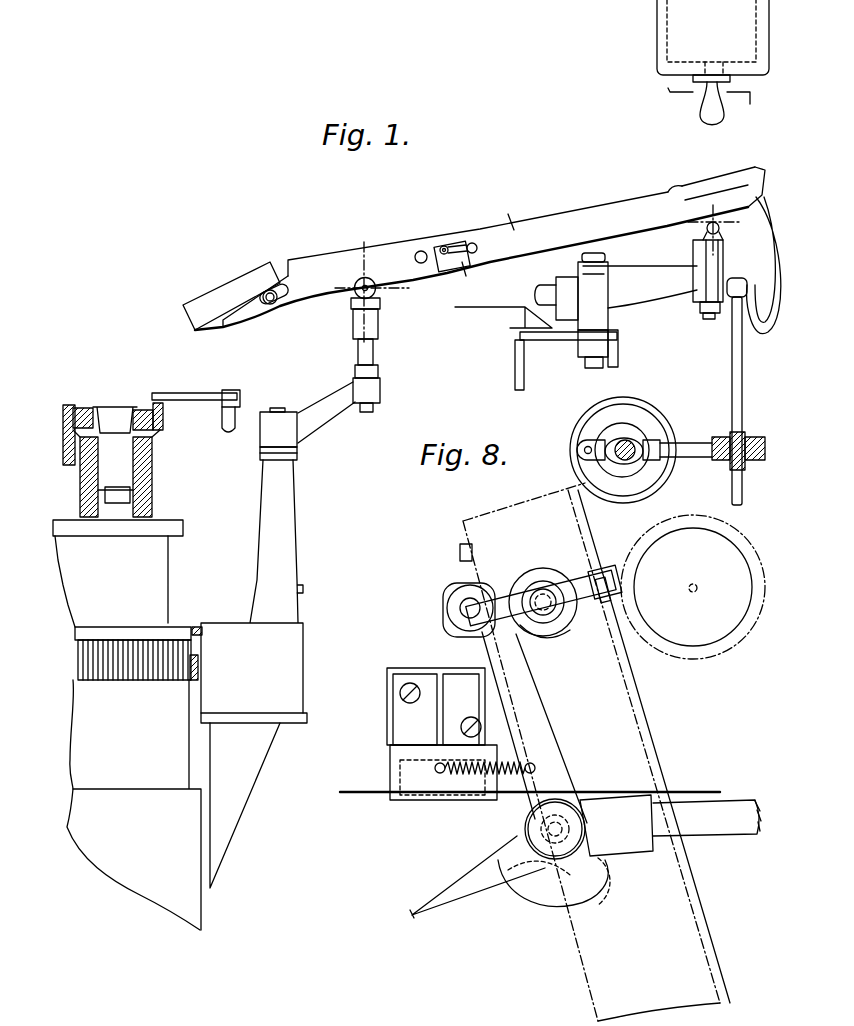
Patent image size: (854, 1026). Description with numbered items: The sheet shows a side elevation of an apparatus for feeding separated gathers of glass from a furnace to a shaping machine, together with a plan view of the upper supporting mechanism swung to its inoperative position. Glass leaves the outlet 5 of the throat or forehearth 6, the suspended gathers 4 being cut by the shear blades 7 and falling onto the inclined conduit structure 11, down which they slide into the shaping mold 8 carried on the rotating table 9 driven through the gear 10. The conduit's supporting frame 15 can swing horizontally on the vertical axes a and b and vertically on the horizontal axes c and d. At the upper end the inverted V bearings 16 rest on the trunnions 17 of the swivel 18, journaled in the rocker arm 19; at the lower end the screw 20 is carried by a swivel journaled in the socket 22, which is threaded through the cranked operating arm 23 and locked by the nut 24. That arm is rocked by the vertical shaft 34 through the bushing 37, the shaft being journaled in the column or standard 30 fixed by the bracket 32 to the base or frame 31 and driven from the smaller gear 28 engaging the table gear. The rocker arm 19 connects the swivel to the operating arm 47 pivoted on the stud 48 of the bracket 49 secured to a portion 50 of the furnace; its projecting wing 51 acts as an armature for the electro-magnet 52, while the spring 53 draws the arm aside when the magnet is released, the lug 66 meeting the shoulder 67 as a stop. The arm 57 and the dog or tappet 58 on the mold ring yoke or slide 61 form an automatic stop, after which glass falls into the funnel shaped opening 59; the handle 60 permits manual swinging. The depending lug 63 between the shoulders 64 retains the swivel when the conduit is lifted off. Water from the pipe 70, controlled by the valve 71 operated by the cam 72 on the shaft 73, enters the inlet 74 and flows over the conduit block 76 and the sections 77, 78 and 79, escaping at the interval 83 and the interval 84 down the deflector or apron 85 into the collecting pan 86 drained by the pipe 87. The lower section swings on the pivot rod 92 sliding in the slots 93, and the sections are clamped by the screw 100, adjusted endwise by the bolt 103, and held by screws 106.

In FIG. 1, the suspended gathers of glass 4 is at (700, 117).
In FIG. 1, the outlet 5 is at (718, 67).
In FIG. 8, the outlet 5 is at (698, 587).
In FIG. 1, the throat or forehearth 6 is at (677, 33).
In FIG. 1, the shear blades 7 is at (670, 92).
In FIG. 1, the shaping mold 8 is at (152, 466).
In FIG. 1, the rotating table 9 is at (158, 573).
In FIG. 1, the gear 10 is at (118, 683).
In FIG. 1, the inclined conduit structure 11 is at (530, 237).
In FIG. 1, the supporting frame 15 is at (499, 265).
In FIG. 8, the supporting frame 15 is at (650, 717).
In FIG. 1, the inverted V bearings 16 is at (724, 262).
In FIG. 1, the trunnions 17 is at (703, 234).
In FIG. 8, the trunnions 17 is at (458, 625).
In FIG. 8, the swivel 18 is at (553, 630).
In FIG. 8, the rocker arm 19 is at (505, 592).
In FIG. 1, the screw 20 is at (355, 296).
In FIG. 1, the socket 22 is at (378, 332).
In FIG. 1, the cranked operating arm 23 is at (325, 420).
In FIG. 1, the nut 24 is at (378, 373).
In FIG. 1, the smaller gear 28 is at (190, 681).
In FIG. 1, the column or standard 30 is at (288, 571).
In FIG. 1, the base or frame 31 is at (190, 896).
In FIG. 1, the bracket 32 is at (240, 803).
In FIG. 1, the vertical shaft 34 is at (278, 408).
In FIG. 1, the bushing 37 is at (298, 452).
In FIG. 1, the operating arm 47 is at (636, 300).
In FIG. 8, the operating arm 47 is at (545, 743).
In FIG. 1, the stud 48 is at (606, 257).
In FIG. 8, the stud 48 is at (565, 808).
In FIG. 1, the bracket 49 is at (619, 356).
In FIG. 8, the bracket 49 is at (612, 878).
In FIG. 8, the portion of the glass furnace 50 is at (372, 796).
In FIG. 8, the projecting wing 51 is at (411, 919).
In FIG. 8, the electro-magnet 52 is at (395, 770).
In FIG. 8, the spring 53 is at (470, 776).
In FIG. 1, the arm 57 is at (201, 393).
In FIG. 1, the dog or tappet 58 is at (163, 413).
In FIG. 8, the funnel shaped opening 59 is at (710, 655).
In FIG. 1, the handle 60 is at (548, 283).
In FIG. 8, the handle 60 is at (720, 838).
In FIG. 1, the mold ring yoke or slide 61 is at (76, 410).
In FIG. 8, the depending lug 63 is at (612, 593).
In FIG. 8, the shoulders 64 is at (546, 568).
In FIG. 8, the lug 66 is at (588, 852).
In FIG. 8, the shoulder 67 is at (591, 893).
In FIG. 1, the pipe 70 is at (732, 382).
In FIG. 1, the valve 71 is at (705, 460).
In FIG. 1, the cam 72 is at (645, 417).
In FIG. 1, the shaft 73 is at (637, 457).
In FIG. 1, the inlet 74 is at (756, 165).
In FIG. 1, the conduit block 76 is at (693, 185).
In FIG. 1, the section 77 is at (587, 205).
In FIG. 1, the section 78 is at (413, 240).
In FIG. 1, the lower end section 79 is at (252, 273).
In FIG. 1, the interval or interruption 83 is at (670, 192).
In FIG. 1, the interval 84 is at (443, 246).
In FIG. 1, the deflector or apron 85 is at (465, 272).
In FIG. 1, the collecting pan 86 is at (476, 312).
In FIG. 1, the pipe 87 is at (515, 377).
In FIG. 1, the pivot rod 92 is at (269, 304).
In FIG. 1, the slots 93 is at (282, 283).
In FIG. 1, the screw 100 is at (418, 253).
In FIG. 1, the bolt 103 is at (446, 246).
In FIG. 1, the screws 106 is at (474, 244).
In FIG. 1, the vertical axis a is at (720, 208).
In FIG. 1, the vertical axis b is at (362, 280).
In FIG. 1, the horizontal axis c is at (720, 230).
In FIG. 1, the horizontal axis d is at (379, 287).